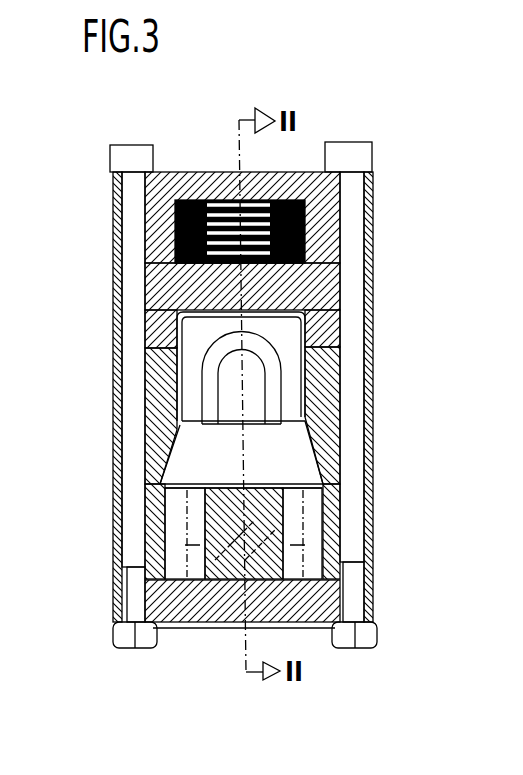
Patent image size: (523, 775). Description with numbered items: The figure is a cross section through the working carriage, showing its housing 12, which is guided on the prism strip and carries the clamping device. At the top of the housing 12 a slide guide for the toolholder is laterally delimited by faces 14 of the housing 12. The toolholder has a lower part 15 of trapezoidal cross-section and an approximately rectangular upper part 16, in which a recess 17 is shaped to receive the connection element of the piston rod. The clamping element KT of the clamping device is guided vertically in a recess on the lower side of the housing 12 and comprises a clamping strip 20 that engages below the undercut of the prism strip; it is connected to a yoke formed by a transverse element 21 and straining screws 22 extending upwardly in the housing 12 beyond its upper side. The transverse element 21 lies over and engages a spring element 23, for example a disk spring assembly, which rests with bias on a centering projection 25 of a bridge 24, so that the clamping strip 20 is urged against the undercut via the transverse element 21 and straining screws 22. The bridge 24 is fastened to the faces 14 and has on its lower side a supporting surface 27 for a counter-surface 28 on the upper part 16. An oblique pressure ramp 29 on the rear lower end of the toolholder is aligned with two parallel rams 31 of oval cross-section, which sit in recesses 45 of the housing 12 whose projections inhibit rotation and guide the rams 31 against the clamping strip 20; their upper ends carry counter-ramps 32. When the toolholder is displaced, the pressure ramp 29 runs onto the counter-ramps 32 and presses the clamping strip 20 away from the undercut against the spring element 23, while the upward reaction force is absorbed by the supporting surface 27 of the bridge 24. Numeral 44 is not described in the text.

The housing 12 is at (380, 527).
The faces 14 is at (307, 463).
The lower part 15 is at (323, 482).
The upper part 16 is at (288, 350).
The recess 17 is at (278, 373).
The clamping strip 20 is at (213, 621).
The transverse element 21 is at (373, 192).
The straining screws 22 is at (353, 357).
The spring element 23 is at (196, 173).
The bridge 24 is at (373, 327).
The centering projection 25 is at (223, 263).
The supporting surface 27 is at (330, 286).
The counter-surface 28 is at (332, 322).
The pressure ramp 29 is at (147, 457).
The rams 31 is at (310, 535).
The counter-ramps 32 is at (162, 487).
The nut 44 is at (120, 572).
The recesses 45 is at (333, 597).
The clamping element KT is at (317, 638).